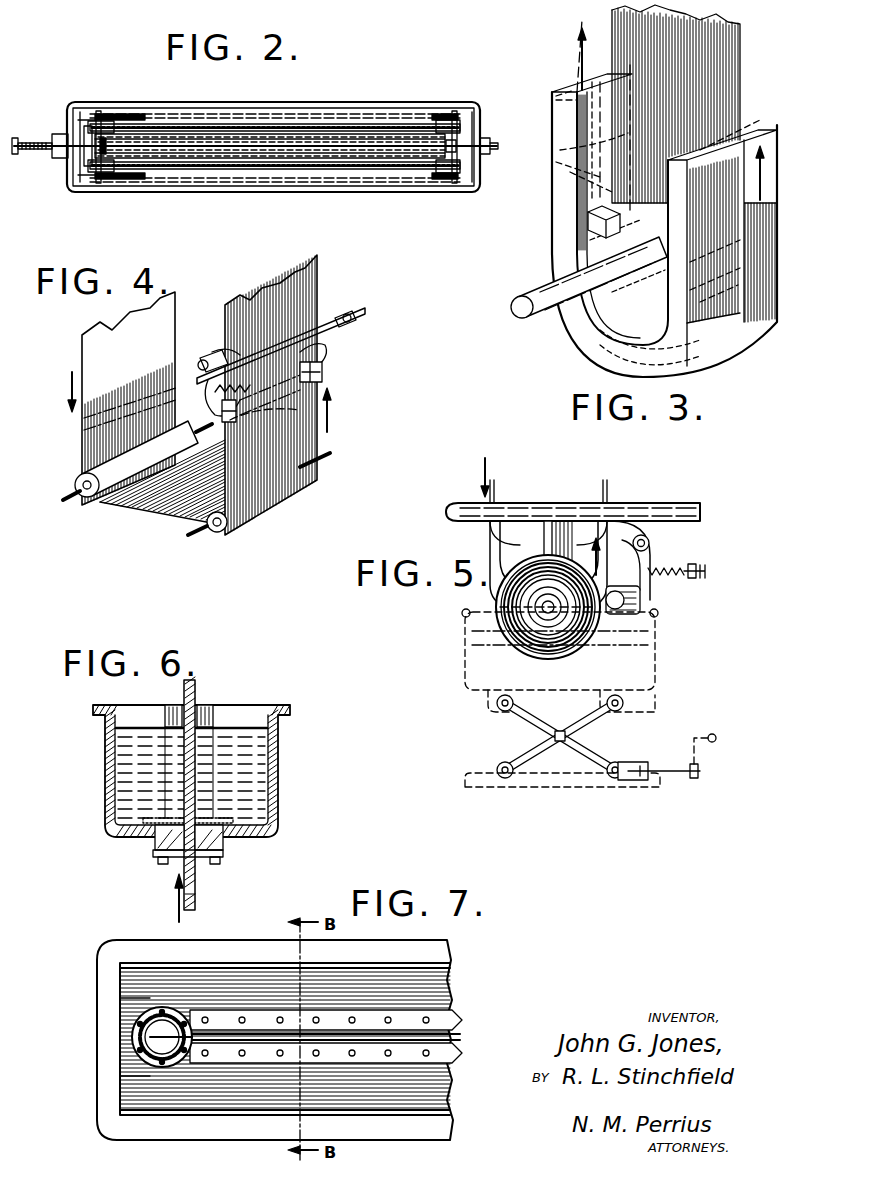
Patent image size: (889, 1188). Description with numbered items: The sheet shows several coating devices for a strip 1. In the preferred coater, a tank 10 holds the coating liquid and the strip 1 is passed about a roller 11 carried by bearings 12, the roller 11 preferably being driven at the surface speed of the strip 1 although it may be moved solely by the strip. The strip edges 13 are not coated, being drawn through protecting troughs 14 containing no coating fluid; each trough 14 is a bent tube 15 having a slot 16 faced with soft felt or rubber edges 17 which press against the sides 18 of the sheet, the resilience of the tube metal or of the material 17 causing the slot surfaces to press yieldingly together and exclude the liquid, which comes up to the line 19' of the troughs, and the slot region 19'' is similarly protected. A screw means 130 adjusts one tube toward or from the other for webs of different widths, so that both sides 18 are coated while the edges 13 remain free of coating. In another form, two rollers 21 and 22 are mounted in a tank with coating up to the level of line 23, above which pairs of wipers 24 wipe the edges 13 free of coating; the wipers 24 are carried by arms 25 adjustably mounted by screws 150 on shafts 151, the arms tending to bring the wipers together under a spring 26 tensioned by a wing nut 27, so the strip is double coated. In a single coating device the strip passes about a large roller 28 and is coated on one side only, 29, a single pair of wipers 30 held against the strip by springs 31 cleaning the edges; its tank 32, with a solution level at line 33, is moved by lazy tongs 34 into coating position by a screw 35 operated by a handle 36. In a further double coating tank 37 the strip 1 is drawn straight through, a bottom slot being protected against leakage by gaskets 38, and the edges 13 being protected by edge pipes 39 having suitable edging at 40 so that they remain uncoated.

In FIG. 2, the strip 1 is at (265, 126).
In FIG. 3, the strip 1 is at (698, 68).
In FIG. 4, the strip 1 is at (105, 352).
In FIG. 5, the strip 1 is at (500, 600).
In FIG. 6, the strip 1 is at (197, 702).
In FIG. 7, the strip 1 is at (458, 1044).
In FIG. 2, the tank 10 is at (170, 112).
In FIG. 2, the roller 11 is at (360, 140).
In FIG. 2, the bearings 12 is at (58, 134).
In FIG. 3, the bearings 12 is at (566, 252).
In FIG. 2, the strip edges 13 is at (100, 111).
In FIG. 3, the strip edges 13 is at (580, 68).
In FIG. 4, the strip edges 13 is at (232, 332).
In FIG. 7, the strip edges 13 is at (145, 1038).
In FIG. 2, the protecting troughs 14 is at (88, 165).
In FIG. 3, the protecting troughs 14 is at (588, 202).
In FIG. 2, the bent tube 15 is at (88, 110).
In FIG. 3, the bent tube 15 is at (612, 340).
In FIG. 2, the slot 16 is at (112, 118).
In FIG. 3, the slot 16 is at (576, 130).
In FIG. 3, the soft felt or rubber edges 17 is at (556, 102).
In FIG. 2, the sides of sheet 18 is at (310, 128).
In FIG. 3, the sides of sheet 18 is at (580, 36).
In FIG. 3, the line of coating material 19' is at (566, 173).
In FIG. 3, the slot 19'' is at (715, 268).
In FIG. 4, the roller 21 is at (110, 474).
In FIG. 4, the roller 22 is at (230, 526).
In FIG. 4, the line 23 is at (90, 422).
In FIG. 4, the wipers 24 is at (222, 420).
In FIG. 4, the arms 25 is at (214, 390).
In FIG. 4, the spring 26 is at (212, 356).
In FIG. 4, the wing nut 27 is at (300, 420).
In FIG. 5, the large roller 28 is at (500, 642).
In FIG. 5, the coated side 29 is at (580, 647).
In FIG. 5, the wipers 30 is at (640, 627).
In FIG. 5, the springs 31 is at (660, 582).
In FIG. 5, the tank 32 is at (470, 684).
In FIG. 5, the line 33 is at (640, 642).
In FIG. 5, the lazy tongs 34 is at (548, 728).
In FIG. 5, the screw 35 is at (652, 764).
In FIG. 5, the handle 36 is at (728, 742).
In FIG. 6, the tank 37 is at (256, 714).
In FIG. 7, the tank 37 is at (245, 988).
In FIG. 6, the gaskets 38 is at (165, 864).
In FIG. 7, the gaskets 38 is at (452, 1030).
In FIG. 6, the edge pipes 39 is at (170, 706).
In FIG. 7, the edge pipes 39 is at (128, 1062).
In FIG. 6, the edging 40 is at (130, 727).
In FIG. 7, the edging 40 is at (120, 1002).
In FIG. 2, the screw means 130 is at (52, 148).
In FIG. 4, the screws 150 is at (198, 364).
In FIG. 4, the shafts 151 is at (352, 318).